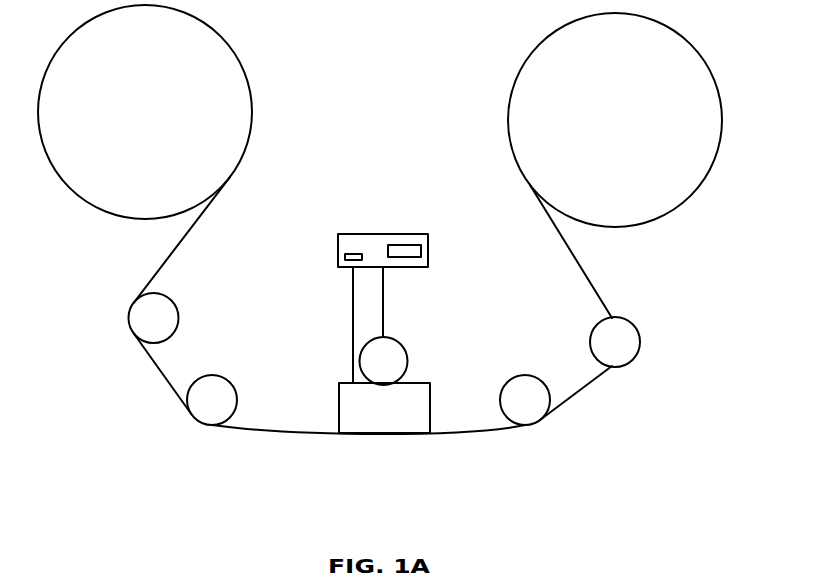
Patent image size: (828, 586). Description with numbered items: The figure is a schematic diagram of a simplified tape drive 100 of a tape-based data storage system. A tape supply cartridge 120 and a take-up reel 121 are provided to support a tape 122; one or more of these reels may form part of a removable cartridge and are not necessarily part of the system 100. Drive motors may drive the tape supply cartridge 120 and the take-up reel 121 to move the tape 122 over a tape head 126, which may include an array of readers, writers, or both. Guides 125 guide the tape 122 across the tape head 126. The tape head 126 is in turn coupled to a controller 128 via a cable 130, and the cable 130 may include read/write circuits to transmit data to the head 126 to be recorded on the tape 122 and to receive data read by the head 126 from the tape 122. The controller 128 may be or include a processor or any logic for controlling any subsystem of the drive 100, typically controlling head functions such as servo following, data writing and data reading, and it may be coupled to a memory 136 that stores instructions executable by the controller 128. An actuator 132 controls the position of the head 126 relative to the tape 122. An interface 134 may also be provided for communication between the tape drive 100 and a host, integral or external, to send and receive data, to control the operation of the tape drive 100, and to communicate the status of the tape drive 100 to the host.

The tape drive 100 is at (113, 261).
The tape supply cartridge 120 is at (250, 90).
The take-up reel 121 is at (697, 190).
The tape 122 is at (276, 431).
The guides 125 is at (212, 375).
The tape head 126 is at (430, 408).
The controller 128 is at (382, 234).
The cable 130 is at (353, 360).
The actuator 132 is at (402, 344).
The interface 134 is at (412, 245).
The memory 136 is at (351, 254).